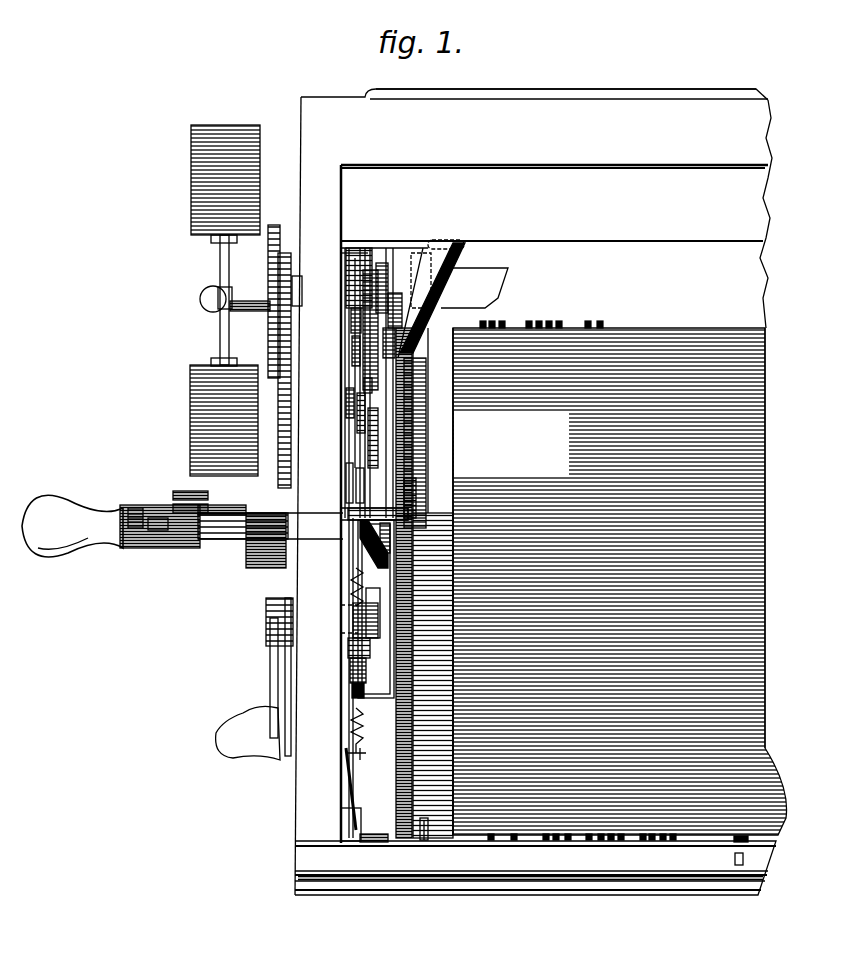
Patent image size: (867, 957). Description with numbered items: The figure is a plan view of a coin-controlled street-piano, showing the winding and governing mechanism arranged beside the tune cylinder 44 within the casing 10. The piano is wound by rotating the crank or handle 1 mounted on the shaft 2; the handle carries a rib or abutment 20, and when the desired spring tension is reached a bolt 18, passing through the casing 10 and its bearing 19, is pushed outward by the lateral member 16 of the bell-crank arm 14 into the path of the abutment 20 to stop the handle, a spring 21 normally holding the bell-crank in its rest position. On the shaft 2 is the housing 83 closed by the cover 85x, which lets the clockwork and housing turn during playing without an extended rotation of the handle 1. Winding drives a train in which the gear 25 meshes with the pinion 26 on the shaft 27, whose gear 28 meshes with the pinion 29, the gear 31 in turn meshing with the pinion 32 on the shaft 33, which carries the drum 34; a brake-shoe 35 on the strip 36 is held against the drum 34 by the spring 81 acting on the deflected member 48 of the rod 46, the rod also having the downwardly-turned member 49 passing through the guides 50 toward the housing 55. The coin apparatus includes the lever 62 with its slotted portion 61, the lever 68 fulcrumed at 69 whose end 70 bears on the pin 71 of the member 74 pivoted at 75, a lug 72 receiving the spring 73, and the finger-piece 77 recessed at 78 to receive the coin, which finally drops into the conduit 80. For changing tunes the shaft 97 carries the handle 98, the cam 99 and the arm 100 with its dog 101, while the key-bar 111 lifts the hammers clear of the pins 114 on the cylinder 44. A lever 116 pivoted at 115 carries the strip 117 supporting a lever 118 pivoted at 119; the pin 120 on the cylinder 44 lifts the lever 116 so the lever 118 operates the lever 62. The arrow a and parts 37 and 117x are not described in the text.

The crank or handle 1 is at (111, 532).
The shaft 2 is at (270, 534).
The casing 10 is at (535, 503).
The arm 14 is at (408, 583).
The lateral member 16 is at (350, 530).
The bolt 18 is at (150, 510).
The bearing 19 is at (175, 483).
The rib or abutment 20 is at (131, 505).
The spring 21 is at (345, 664).
The gear 25 is at (423, 497).
The pinion 26 is at (400, 440).
The shaft 27 is at (338, 390).
The gear 28 is at (349, 410).
The pinion 29 is at (283, 265).
The gear 31 is at (279, 289).
The pinion 32 is at (258, 293).
The shaft 33 is at (286, 296).
The drum 34 is at (378, 270).
The brake-shoe 35 is at (352, 248).
The strip 36 is at (362, 265).
The block 37 is at (411, 298).
The cylinder 44 is at (628, 581).
The rod 46 is at (343, 308).
The deflected member 48 is at (344, 338).
The downwardly-turned member 49 is at (356, 377).
The guides 50 is at (360, 430).
The shell or housing 55 is at (400, 342).
The slotted portion 61 is at (338, 470).
The bar or lever 62 is at (348, 478).
The lever 68 is at (420, 440).
The fulcrum 69 is at (440, 425).
The end of lever 70 is at (436, 497).
The pin 71 is at (425, 452).
The lug 72 is at (357, 507).
The spring 73 is at (378, 508).
The member 74 is at (440, 505).
The pivot point 75 is at (445, 500).
The finger-piece 77 is at (376, 609).
The recess 78 is at (328, 678).
The conduit 80 is at (440, 242).
The spring 81 is at (347, 352).
The casing or housing 83 is at (262, 552).
The cover 85x is at (240, 548).
The shaft 97 is at (340, 640).
The handle 98 is at (270, 700).
The cam 99 is at (345, 606).
The arm 100 is at (342, 660).
The dog 101 is at (344, 682).
The key-bar 111 is at (472, 278).
The pins 114 is at (525, 313).
The pivot 115 is at (728, 842).
The lever 116 is at (604, 840).
The strip 117 is at (345, 820).
The block 117x is at (405, 836).
The lever 118 is at (347, 797).
The pivot 119 is at (326, 678).
The pin 120 is at (440, 828).
The direction arrow a is at (73, 490).